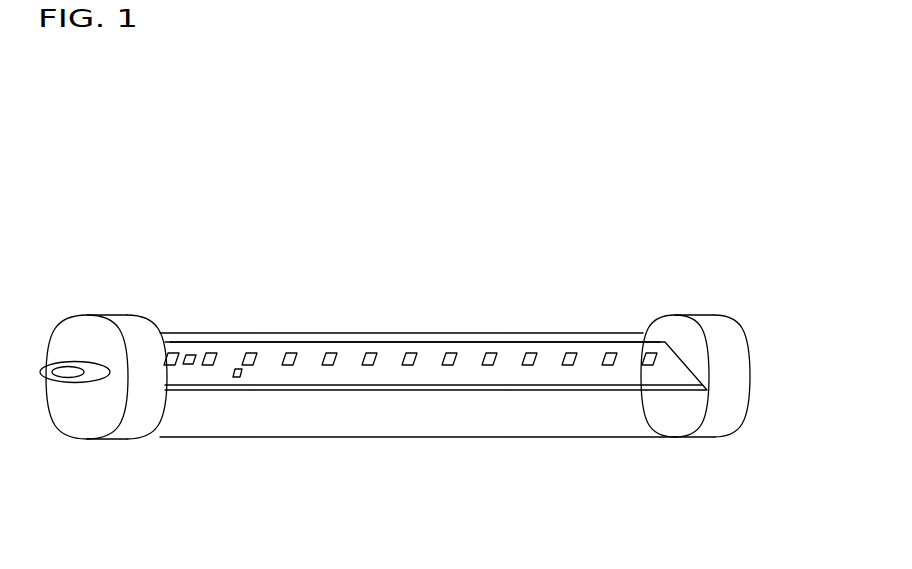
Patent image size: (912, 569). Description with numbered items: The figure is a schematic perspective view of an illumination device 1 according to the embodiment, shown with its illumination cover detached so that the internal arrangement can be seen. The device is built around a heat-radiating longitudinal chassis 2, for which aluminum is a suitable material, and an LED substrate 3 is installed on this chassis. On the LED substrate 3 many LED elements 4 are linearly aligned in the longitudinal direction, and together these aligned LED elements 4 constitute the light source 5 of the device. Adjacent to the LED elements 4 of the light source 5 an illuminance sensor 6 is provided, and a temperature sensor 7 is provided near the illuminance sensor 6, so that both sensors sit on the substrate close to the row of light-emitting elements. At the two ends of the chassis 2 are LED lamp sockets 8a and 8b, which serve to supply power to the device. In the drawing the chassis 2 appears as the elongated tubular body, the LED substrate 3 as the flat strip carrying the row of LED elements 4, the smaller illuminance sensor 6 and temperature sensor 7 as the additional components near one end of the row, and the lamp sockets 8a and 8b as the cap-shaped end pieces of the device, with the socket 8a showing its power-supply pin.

The illumination device 1 is at (476, 212).
The heat-radiating longitudinal chassis 2 is at (419, 424).
The LED substrate 3 is at (549, 351).
The LED elements 4 is at (408, 354).
The light source 5 is at (461, 342).
The illuminance sensor 6 is at (189, 354).
The temperature sensor 7 is at (237, 379).
The LED lamp socket 8a is at (68, 376).
The LED lamp socket 8b is at (750, 372).